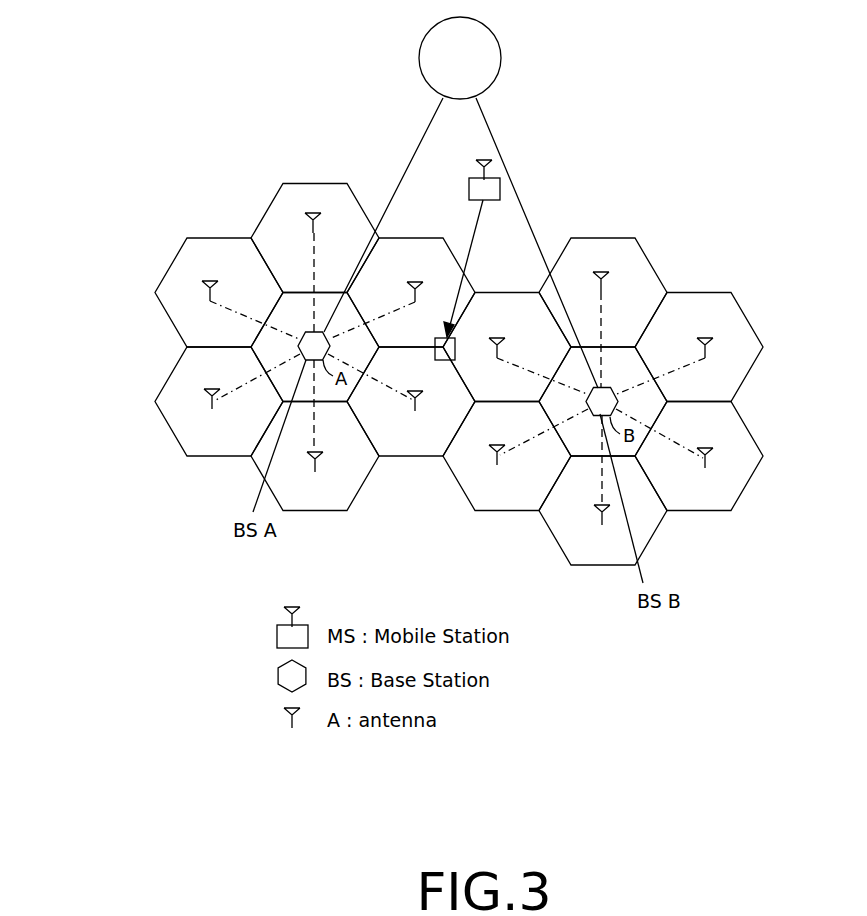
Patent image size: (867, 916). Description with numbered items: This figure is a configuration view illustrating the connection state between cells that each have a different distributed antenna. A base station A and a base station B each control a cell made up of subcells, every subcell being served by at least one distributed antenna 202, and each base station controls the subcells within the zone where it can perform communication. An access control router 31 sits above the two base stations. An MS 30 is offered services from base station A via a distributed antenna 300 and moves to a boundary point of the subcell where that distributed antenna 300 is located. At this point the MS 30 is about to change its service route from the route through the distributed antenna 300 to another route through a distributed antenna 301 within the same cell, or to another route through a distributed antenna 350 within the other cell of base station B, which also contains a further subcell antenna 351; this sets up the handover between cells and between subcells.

The access control router (ACR) 31 is at (501, 58).
The MS 30 is at (469, 190).
The distributed antenna 202 is at (190, 397).
The distributed antenna 300A 300 is at (411, 292).
The distributed antenna 301A 301 is at (411, 401).
The distributed antenna 350B 350 is at (507, 347).
The cell 351(B) of base station B 351 is at (507, 456).